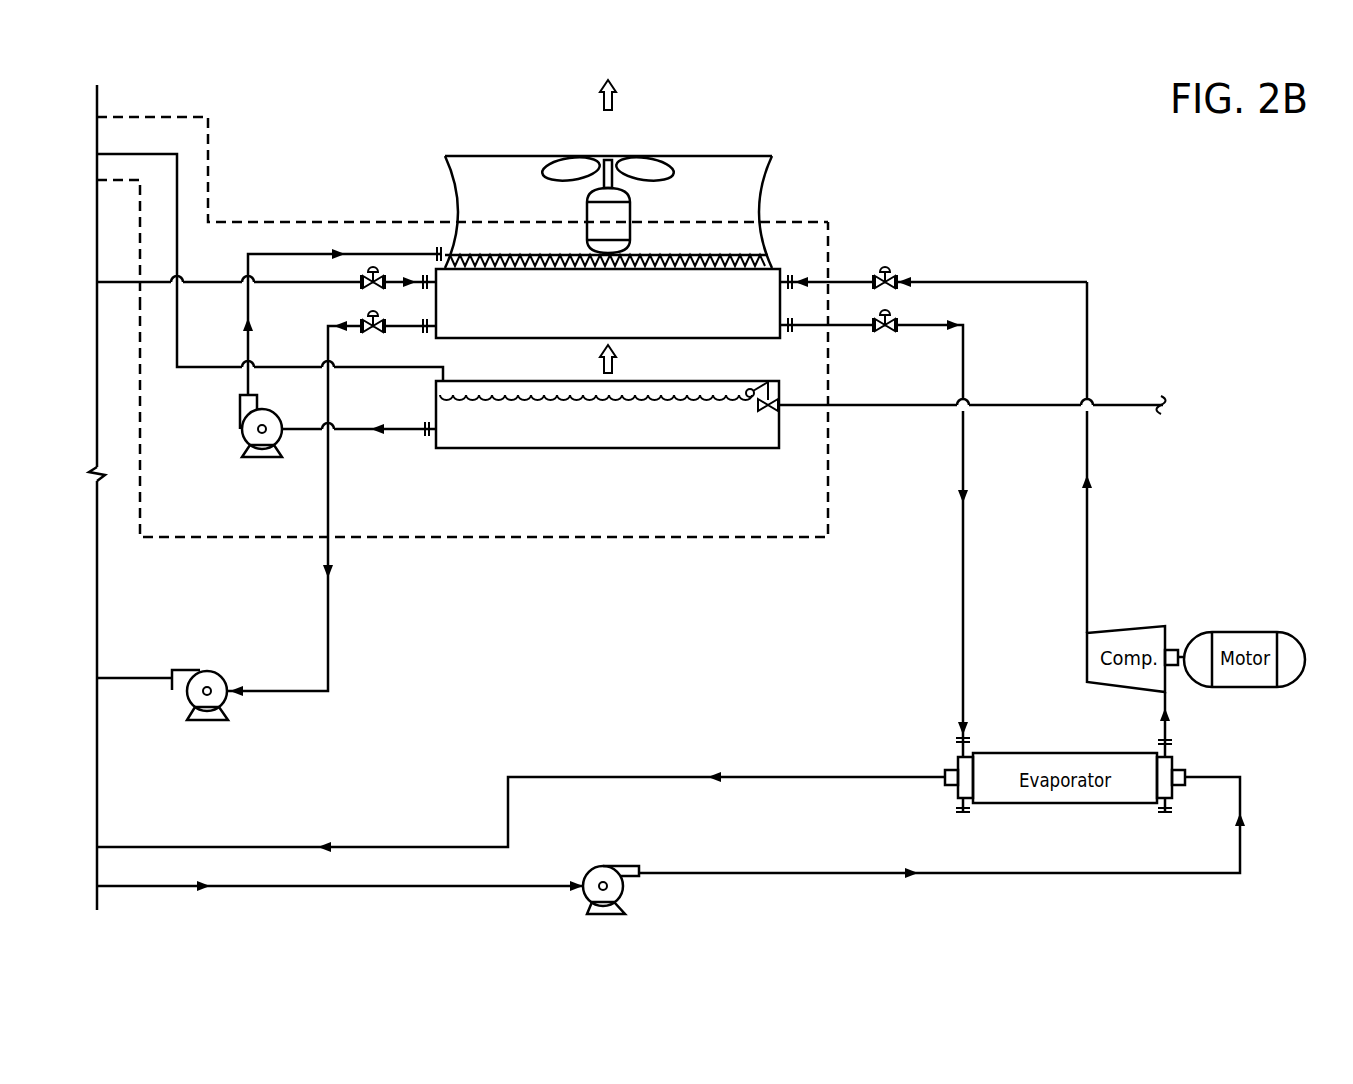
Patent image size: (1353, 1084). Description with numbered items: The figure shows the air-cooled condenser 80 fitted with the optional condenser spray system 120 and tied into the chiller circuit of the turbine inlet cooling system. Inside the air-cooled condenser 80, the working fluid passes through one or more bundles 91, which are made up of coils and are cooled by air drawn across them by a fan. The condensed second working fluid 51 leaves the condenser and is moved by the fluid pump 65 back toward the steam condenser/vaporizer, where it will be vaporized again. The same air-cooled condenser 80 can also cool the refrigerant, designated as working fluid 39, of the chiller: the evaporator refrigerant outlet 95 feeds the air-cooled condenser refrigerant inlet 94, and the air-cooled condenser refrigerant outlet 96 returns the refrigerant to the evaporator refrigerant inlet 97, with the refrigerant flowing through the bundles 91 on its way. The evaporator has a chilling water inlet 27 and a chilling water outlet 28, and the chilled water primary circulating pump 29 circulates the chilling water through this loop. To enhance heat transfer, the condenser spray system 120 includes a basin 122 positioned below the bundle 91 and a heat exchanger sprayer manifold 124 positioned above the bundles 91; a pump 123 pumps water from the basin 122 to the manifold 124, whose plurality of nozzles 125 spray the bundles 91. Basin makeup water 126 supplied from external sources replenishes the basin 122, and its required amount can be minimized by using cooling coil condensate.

The air-cooled condenser 80 is at (765, 181).
The heat exchanger sprayer manifold 124 is at (742, 241).
The nozzles 125 is at (647, 266).
The bundle 91 is at (650, 316).
The basin 122 is at (663, 436).
The condenser spray system 120 is at (725, 513).
The pump 123 is at (240, 421).
The basin makeup water 126 is at (1124, 408).
The air-cooled condenser refrigerant inlet 94 is at (790, 272).
The air-cooled condenser refrigerant outlet 96 is at (790, 335).
The evaporator refrigerant inlet 97 is at (958, 740).
The evaporator refrigerant outlet 95 is at (1160, 740).
The working fluid 39 is at (1087, 533).
The chilling water inlet 27 is at (1187, 777).
The chilling water outlet 28 is at (945, 780).
The chilled water primary circulating pump 29 is at (626, 888).
The second working fluid 51 is at (328, 620).
The fluid pump 65 is at (205, 668).